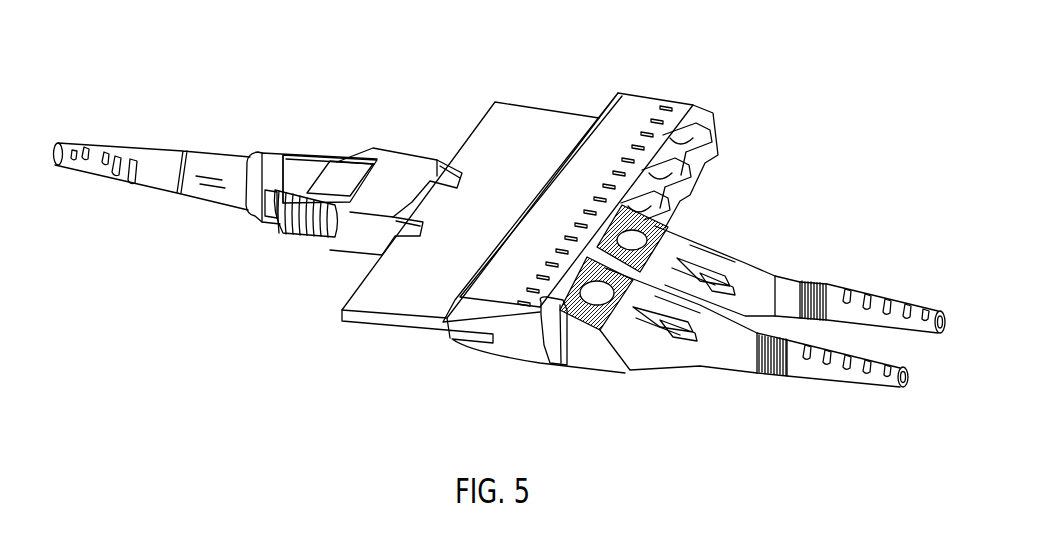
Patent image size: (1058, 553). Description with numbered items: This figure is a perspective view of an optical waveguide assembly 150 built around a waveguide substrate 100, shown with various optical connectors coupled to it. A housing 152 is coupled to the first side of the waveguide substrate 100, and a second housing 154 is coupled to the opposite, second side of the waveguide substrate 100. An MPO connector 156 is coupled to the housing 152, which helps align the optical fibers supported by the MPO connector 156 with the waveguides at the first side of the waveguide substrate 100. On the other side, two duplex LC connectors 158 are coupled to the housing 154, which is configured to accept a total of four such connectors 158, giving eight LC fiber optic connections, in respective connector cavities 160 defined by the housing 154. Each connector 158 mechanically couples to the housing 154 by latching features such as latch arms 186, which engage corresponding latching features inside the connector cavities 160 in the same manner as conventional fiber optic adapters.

The optical waveguide assembly 150 is at (508, 51).
The waveguide substrate 100 is at (556, 108).
The housing 152 is at (402, 150).
The housing 154 is at (652, 97).
The MPO connector 156 is at (319, 152).
The duplex LC connectors 158 is at (722, 258).
The connector cavities 160 is at (705, 147).
The latch arms 186 is at (549, 325).